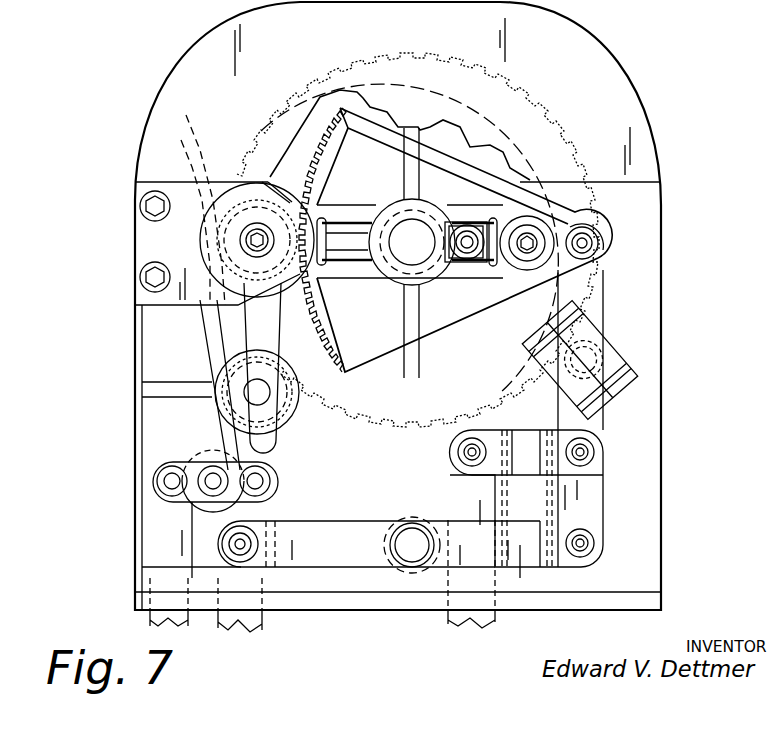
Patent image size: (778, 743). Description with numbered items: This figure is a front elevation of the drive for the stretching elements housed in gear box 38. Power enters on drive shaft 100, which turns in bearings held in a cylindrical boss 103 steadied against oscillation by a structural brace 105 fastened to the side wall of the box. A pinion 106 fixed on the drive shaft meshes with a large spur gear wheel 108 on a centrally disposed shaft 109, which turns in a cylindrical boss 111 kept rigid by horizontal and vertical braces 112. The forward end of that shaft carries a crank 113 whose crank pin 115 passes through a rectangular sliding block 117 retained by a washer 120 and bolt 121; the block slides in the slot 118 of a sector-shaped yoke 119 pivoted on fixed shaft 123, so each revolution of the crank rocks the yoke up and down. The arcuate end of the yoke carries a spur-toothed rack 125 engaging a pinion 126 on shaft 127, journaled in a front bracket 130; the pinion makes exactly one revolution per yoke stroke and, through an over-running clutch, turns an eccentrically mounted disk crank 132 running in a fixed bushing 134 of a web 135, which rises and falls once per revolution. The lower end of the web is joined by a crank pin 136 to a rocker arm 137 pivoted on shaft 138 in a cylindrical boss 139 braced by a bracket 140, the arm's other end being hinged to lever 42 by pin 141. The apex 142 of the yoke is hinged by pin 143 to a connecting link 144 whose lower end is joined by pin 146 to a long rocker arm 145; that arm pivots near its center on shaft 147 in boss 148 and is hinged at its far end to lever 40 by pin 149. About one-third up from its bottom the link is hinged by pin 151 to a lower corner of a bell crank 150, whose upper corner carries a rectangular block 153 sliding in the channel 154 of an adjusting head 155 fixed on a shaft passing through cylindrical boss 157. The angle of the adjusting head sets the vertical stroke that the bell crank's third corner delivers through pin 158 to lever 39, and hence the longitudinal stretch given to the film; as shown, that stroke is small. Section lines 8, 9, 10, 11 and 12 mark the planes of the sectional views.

The gear box 38 is at (185, 74).
The lever 39 is at (448, 618).
The lever 40 is at (264, 626).
The lever 42 is at (150, 616).
The drive shaft 100 is at (262, 395).
The cylindrical boss 103 is at (322, 366).
The structural brace 105 is at (184, 392).
The pinion 106 is at (232, 362).
The large spur gear wheel 108 is at (405, 428).
The centrally disposed shaft 109 is at (405, 224).
The cylindrical boss 111 is at (393, 282).
The horizontal and vertical braces 112 is at (402, 162).
The crank 113 is at (448, 276).
The crank pin 115 is at (496, 220).
The rectangular sliding block 117 is at (495, 318).
The slot 118 is at (333, 272).
The yoke 119 is at (458, 168).
The washer 120 is at (477, 230).
The bolt 121 is at (466, 226).
The fixed shaft 123 is at (535, 265).
The spur-toothed rack 125 is at (362, 94).
The pinion 126 is at (300, 200).
The shaft 127 is at (196, 256).
The front bracket 130 is at (177, 205).
The eccentrically mounted disk crank 132 is at (183, 143).
The fixed bushing 134 is at (188, 116).
The web 135 is at (212, 329).
The crank pin 136 is at (262, 481).
The rocker arm 137 is at (186, 466).
The shaft 138 is at (214, 468).
The cylindrical boss 139 is at (228, 508).
The bracket 140 is at (160, 481).
The pin 141 is at (162, 490).
The apex 142 is at (598, 241).
The pin 143 is at (600, 223).
The connecting link 144 is at (598, 518).
The long rocker arm 145 is at (345, 530).
The pin 146 is at (590, 552).
The shaft 147 is at (405, 535).
The boss 148 is at (432, 525).
The pin 149 is at (244, 540).
The bell crank 150 is at (518, 466).
The pin 151 is at (590, 462).
The rectangular block 153 is at (598, 394).
The channel 154 is at (623, 395).
The adjusting head 155 is at (638, 368).
The cylindrical boss 157 is at (607, 350).
The pin 158 is at (462, 460).
The section line 8- 8 is at (112, 230).
The section line 9- 9 is at (647, 630).
The section line 10- 10 is at (107, 582).
The section line 11- 11 is at (270, 319).
The section line 12- 12 is at (627, 300).